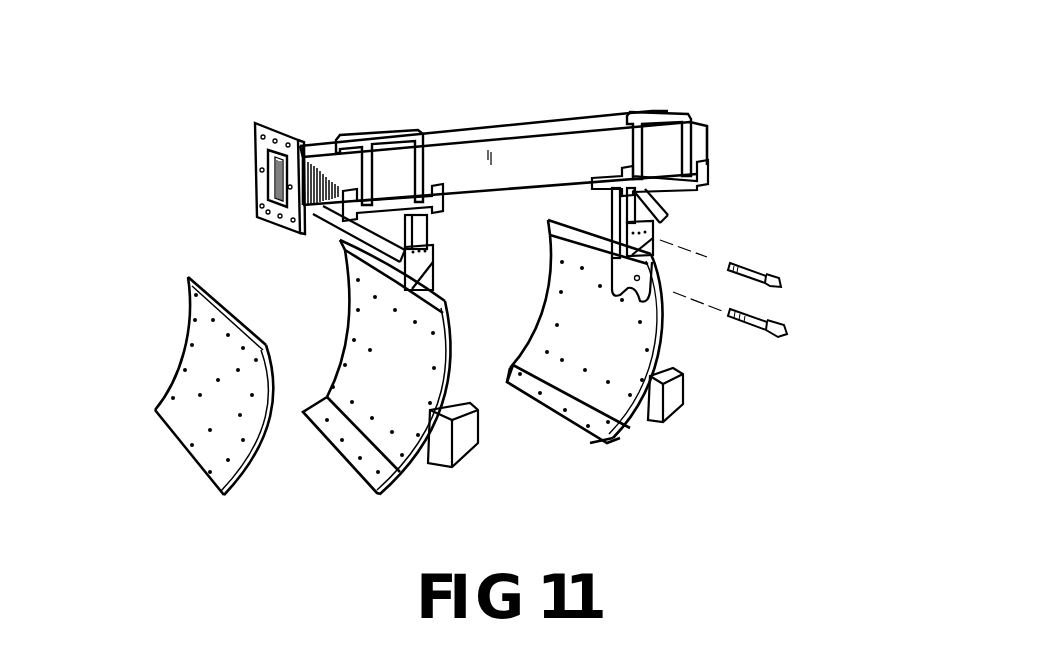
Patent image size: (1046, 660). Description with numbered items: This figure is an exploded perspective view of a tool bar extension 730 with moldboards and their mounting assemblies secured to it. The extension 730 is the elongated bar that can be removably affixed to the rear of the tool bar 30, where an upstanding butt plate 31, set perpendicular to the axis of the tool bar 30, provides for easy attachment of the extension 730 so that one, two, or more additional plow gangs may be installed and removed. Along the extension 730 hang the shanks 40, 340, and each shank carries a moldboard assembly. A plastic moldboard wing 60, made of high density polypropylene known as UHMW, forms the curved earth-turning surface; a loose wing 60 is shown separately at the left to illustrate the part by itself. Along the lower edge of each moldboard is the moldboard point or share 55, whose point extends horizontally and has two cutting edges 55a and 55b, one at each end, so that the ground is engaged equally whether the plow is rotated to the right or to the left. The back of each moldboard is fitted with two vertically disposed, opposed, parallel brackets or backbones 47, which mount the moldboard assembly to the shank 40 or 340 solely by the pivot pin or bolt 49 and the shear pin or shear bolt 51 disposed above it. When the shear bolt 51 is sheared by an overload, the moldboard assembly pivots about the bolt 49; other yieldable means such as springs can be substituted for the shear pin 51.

The extension 730 is at (519, 116).
The tool bar 30 is at (321, 152).
The butt plate 31 is at (258, 182).
The shank 340 is at (708, 181).
The shank 40 is at (660, 204).
The brackets or backbones 47 is at (433, 248).
The pivot pin or bolt 49 is at (762, 315).
The shear pin or shear bolt 51 is at (763, 268).
The moldboard point or share 55 is at (342, 450).
The cutting edge 55a is at (537, 407).
The cutting edge 55b is at (603, 440).
The plastic moldboard wing 60 is at (188, 378).